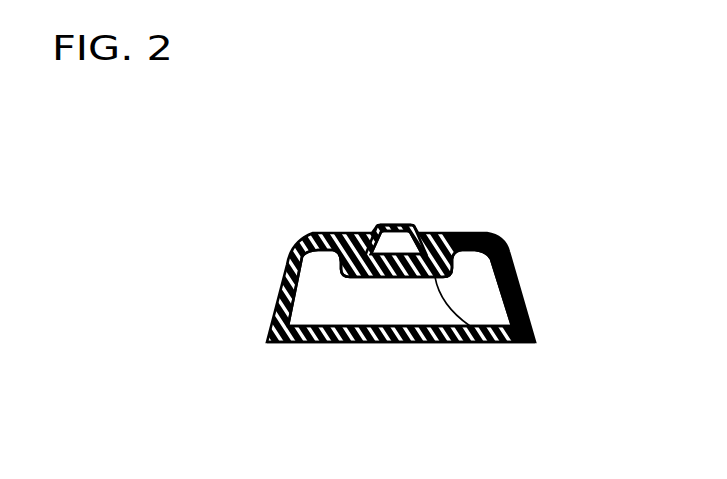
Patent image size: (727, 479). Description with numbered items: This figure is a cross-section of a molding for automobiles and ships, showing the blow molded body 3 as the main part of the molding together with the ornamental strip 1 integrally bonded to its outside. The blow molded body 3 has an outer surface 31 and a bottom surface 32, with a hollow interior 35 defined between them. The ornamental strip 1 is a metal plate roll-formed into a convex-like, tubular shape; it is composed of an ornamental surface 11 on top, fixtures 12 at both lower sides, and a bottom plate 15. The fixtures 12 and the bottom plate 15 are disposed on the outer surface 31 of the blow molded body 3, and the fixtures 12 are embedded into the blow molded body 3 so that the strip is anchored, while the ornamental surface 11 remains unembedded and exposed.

The ornamental strip 1 is at (400, 227).
The ornamental surface 11 is at (378, 227).
The fixture 12 is at (483, 345).
The bottom plate 15 is at (415, 225).
The blow molded body 3 is at (274, 270).
The outer surface 31 is at (350, 227).
The bottom surface 32 is at (385, 345).
The hollow interior 35 is at (338, 302).